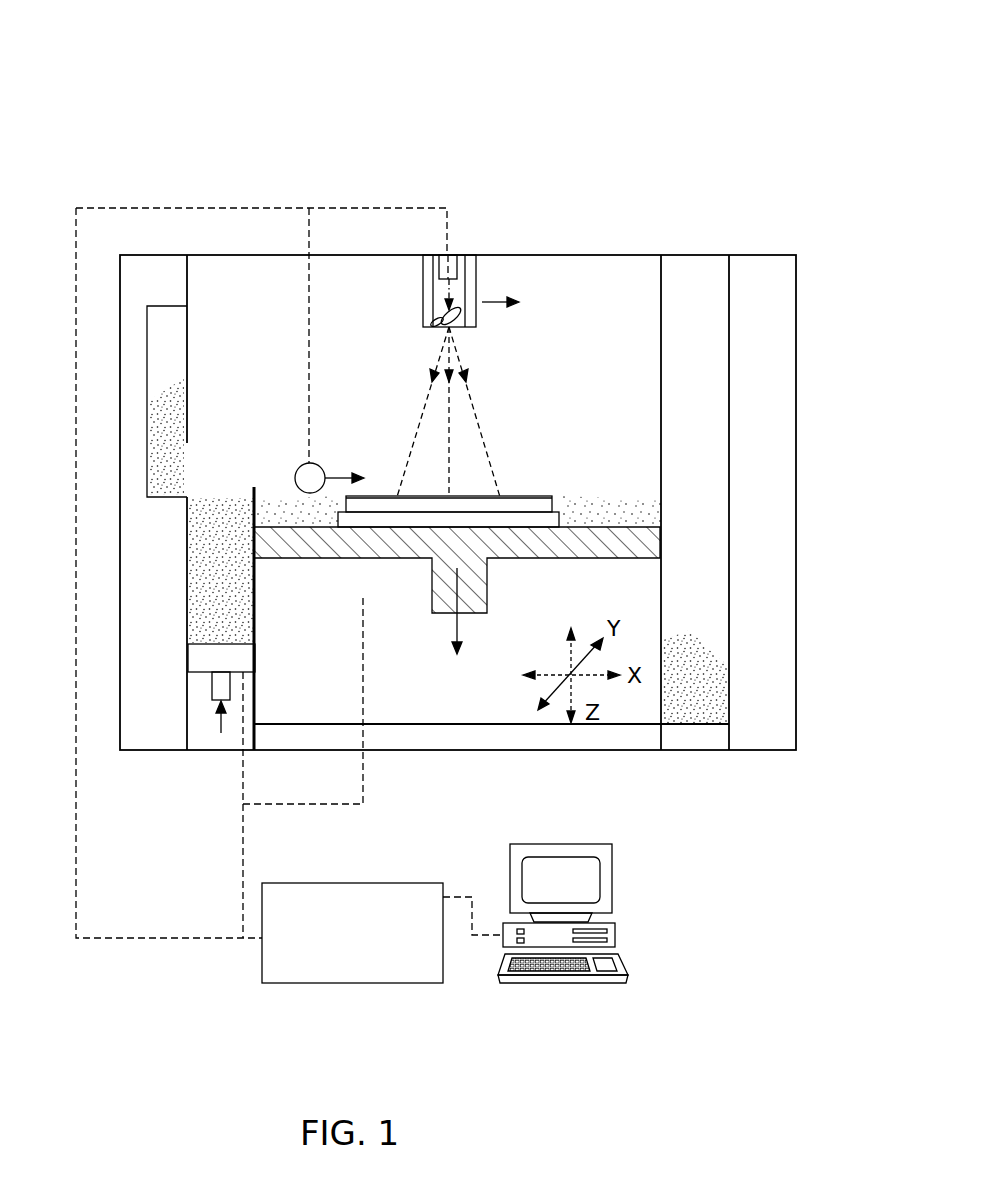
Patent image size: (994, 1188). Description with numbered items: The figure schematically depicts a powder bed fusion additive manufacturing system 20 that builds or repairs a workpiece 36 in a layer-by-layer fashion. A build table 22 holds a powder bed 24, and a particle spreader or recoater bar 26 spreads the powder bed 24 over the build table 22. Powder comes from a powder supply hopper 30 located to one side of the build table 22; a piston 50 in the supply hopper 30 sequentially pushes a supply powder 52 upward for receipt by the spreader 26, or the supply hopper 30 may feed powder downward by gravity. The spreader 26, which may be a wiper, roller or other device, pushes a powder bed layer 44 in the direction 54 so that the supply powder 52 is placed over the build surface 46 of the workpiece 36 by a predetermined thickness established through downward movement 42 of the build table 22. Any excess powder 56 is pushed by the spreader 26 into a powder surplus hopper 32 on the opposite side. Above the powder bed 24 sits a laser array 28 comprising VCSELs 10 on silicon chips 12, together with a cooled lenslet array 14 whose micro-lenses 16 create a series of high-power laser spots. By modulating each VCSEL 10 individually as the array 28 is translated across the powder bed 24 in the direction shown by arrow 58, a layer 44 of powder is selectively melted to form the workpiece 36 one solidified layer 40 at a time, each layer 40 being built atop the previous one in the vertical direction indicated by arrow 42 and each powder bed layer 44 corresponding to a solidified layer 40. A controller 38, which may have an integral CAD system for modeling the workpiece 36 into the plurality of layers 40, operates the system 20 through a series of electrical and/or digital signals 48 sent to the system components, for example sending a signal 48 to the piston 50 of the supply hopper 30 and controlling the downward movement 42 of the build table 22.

The powder bed fusion additive manufacturing system 20 is at (655, 88).
The VCSEL 10 is at (453, 262).
The silicon chip 12 is at (449, 294).
The cooled lenslet array 14 is at (432, 322).
The micro-lens 16 is at (436, 322).
The build table 22 is at (565, 572).
The powder bed 24 is at (690, 498).
The recoater bar 26 is at (301, 466).
The laser array 28 is at (488, 280).
The powder supply hopper 30 is at (182, 338).
The powder surplus hopper 32 is at (711, 601).
The workpiece 36 is at (515, 475).
The controller 38 is at (626, 1000).
The solidified layer 40 is at (390, 522).
The downward movement 42 is at (452, 634).
The powder bed layer 44 is at (254, 492).
The build surface 46 is at (542, 495).
The electrical and/or digital signals 48 is at (225, 207).
The piston 50 is at (205, 658).
The supply powder 52 is at (188, 478).
The direction 54 is at (370, 496).
The excess powder 56 is at (712, 692).
The arrow 58 is at (497, 310).